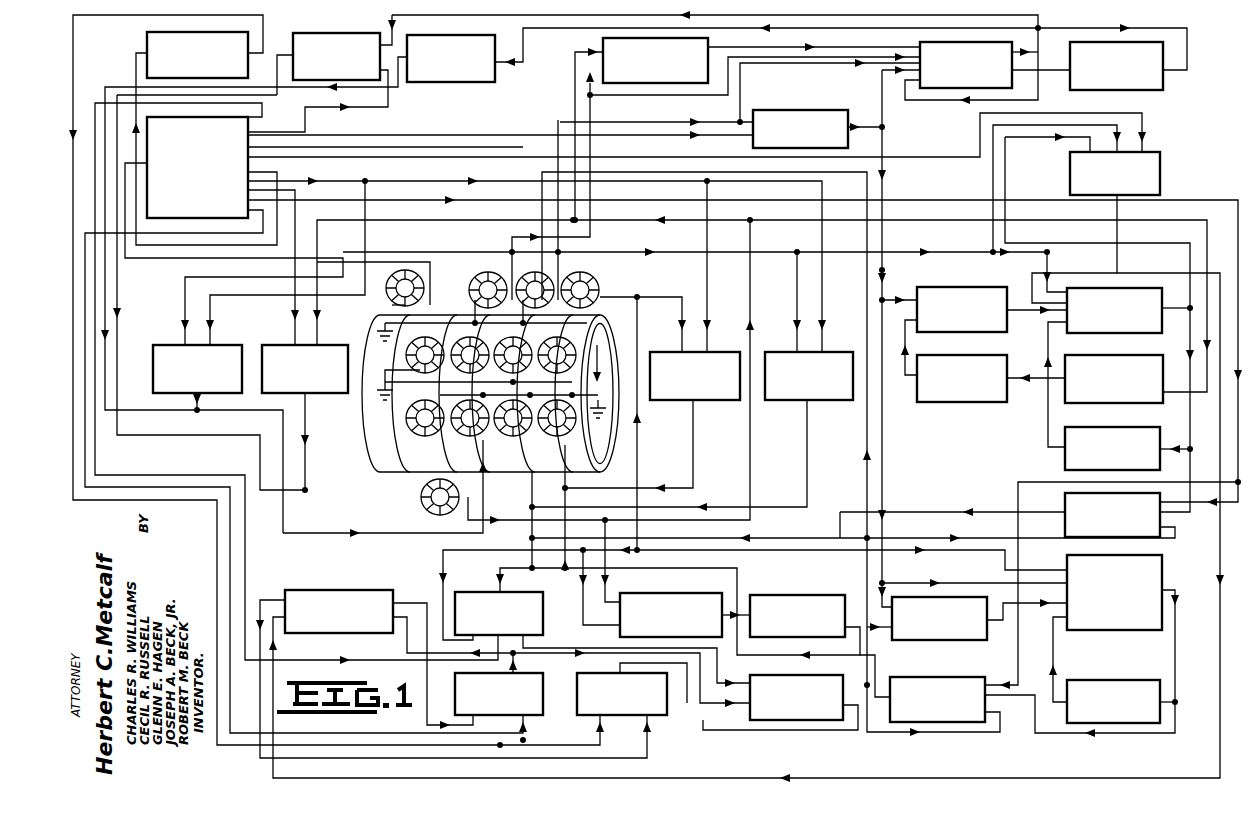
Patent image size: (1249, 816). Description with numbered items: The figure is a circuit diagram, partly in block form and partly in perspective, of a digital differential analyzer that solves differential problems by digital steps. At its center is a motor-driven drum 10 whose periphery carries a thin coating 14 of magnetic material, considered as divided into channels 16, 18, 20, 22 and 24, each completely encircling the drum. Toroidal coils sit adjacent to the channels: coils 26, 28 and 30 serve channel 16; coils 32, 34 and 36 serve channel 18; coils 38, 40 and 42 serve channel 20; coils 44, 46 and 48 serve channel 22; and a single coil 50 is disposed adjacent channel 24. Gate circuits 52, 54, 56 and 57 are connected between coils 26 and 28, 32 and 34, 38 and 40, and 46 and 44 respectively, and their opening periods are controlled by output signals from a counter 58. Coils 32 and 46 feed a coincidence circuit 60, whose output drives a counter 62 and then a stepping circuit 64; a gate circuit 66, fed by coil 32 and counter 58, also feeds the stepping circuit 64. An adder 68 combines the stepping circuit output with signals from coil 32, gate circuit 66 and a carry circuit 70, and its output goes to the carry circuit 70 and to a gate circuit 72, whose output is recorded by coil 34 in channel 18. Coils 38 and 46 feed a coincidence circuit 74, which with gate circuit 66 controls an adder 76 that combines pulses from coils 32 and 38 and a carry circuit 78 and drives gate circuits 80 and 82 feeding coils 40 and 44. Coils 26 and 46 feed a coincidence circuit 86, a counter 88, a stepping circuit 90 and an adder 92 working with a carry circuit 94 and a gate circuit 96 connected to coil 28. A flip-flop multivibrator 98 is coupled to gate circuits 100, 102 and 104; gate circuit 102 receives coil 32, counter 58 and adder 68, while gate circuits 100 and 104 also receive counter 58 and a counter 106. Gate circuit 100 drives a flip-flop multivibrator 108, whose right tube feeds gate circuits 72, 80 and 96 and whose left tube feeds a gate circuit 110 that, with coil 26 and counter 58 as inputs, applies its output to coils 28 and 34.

The drum 10 is at (597, 462).
The coating of magnetic material 14 is at (600, 320).
The channel 16 is at (545, 472).
The channel 18 is at (498, 472).
The channel 20 is at (462, 318).
The channel 22 is at (398, 405).
The channel 24 is at (375, 458).
The coil 26 is at (595, 282).
The coil 28 is at (560, 436).
The coil 30 is at (562, 345).
The coil 32 is at (535, 273).
The coil 34 is at (515, 436).
The coil 36 is at (482, 340).
The coil 38 is at (475, 280).
The coil 40 is at (470, 436).
The coil 42 is at (432, 345).
The coil 44 is at (415, 432).
The coil 46 is at (425, 505).
The coil 48 is at (408, 365).
The coil 50 is at (392, 300).
The gate circuit 52 is at (700, 400).
The gate circuit 54 is at (815, 400).
The gate circuit 56 is at (160, 345).
The gate circuit 57 is at (312, 393).
The counter 58 is at (248, 130).
The coincidence circuit 60 is at (1130, 403).
The counter 62 is at (945, 402).
The stepping circuit 64 is at (945, 332).
The gate circuit 66 is at (810, 110).
The adder 68 is at (1100, 333).
The carry circuit 70 is at (1090, 427).
The gate circuit 72 is at (1065, 507).
The coincidence circuit 74 is at (603, 45).
The adder 76 is at (1012, 58).
The carry circuit 78 is at (1163, 88).
The gate circuit 80 is at (455, 35).
The gate circuit 82 is at (338, 33).
The coincidence circuit 86 is at (684, 593).
The counter 88 is at (805, 595).
The stepping circuit 90 is at (900, 640).
The adder 92 is at (1168, 563).
The carry circuit 94 is at (1100, 680).
The gate circuit 96 is at (955, 677).
The flip-flop multivibrator 98 is at (310, 590).
The gate circuit 100 is at (655, 715).
The gate circuit 102 is at (1160, 170).
The gate circuit 104 is at (543, 715).
The counter 106 is at (147, 42).
The flip-flop multivibrator 108 is at (750, 708).
The gate circuit 110 is at (543, 622).